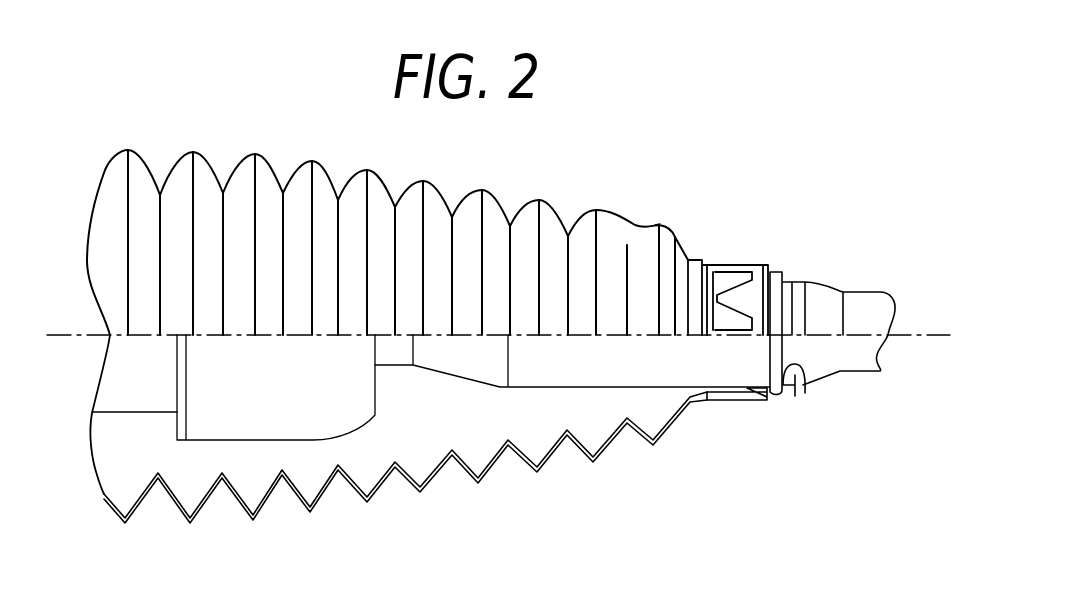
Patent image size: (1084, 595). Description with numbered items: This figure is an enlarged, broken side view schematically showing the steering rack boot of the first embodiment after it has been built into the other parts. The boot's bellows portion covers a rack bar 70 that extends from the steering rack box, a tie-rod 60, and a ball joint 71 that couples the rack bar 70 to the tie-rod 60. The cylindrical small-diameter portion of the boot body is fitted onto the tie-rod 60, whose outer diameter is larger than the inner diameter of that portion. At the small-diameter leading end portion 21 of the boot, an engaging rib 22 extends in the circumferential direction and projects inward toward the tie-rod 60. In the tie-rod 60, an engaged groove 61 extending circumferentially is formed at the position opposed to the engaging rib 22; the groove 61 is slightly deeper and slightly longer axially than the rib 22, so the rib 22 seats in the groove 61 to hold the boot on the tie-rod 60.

The rack bar 70 is at (132, 395).
The ball joint 71 is at (290, 423).
The tie-rod 60 is at (622, 367).
The engaged groove 61 is at (789, 381).
The small-diameter leading end portion 21 is at (779, 394).
The engaging rib 22 is at (772, 392).